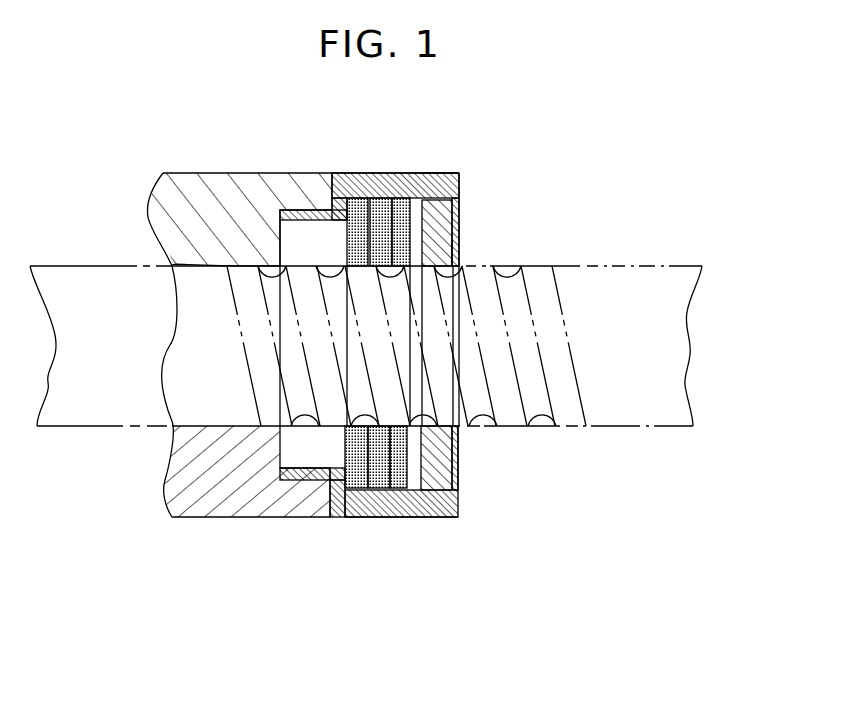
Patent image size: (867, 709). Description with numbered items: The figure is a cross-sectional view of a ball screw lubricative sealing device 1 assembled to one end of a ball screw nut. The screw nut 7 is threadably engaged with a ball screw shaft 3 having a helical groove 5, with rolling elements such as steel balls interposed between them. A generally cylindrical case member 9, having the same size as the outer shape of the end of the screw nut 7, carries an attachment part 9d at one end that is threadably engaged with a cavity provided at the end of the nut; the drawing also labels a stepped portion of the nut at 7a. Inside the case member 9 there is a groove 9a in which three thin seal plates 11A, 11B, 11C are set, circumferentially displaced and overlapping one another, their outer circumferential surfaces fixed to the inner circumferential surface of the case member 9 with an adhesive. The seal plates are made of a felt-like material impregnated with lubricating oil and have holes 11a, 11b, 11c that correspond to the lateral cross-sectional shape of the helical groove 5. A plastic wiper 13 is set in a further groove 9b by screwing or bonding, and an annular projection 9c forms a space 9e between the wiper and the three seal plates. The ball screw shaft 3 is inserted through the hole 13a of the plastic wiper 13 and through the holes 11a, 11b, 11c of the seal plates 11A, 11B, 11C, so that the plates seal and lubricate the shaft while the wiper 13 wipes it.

The ball screw lubricative sealing device 1 is at (727, 147).
The ball screw shaft 3 is at (657, 268).
The helical groove 5 is at (546, 410).
The screw nut 7 is at (213, 170).
The stepped portion of support member 7a is at (280, 223).
The case member 9 is at (398, 170).
The groove 9a is at (363, 172).
The groove 9b is at (460, 196).
The annular projection 9c is at (441, 172).
The attachment part 9d is at (305, 480).
The space 9e is at (459, 493).
The thin seal plate 11A is at (351, 483).
The thin seal plate 11B is at (376, 483).
The thin seal plate 11C is at (398, 483).
The hole 11a is at (330, 480).
The hole 11b is at (442, 512).
The hole 11c is at (459, 470).
The plastic wiper 13 is at (455, 223).
The hole 13a is at (460, 265).